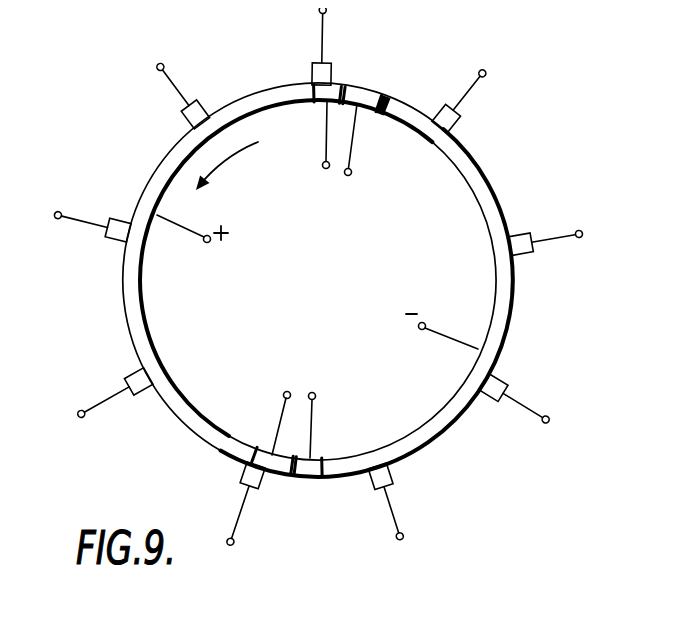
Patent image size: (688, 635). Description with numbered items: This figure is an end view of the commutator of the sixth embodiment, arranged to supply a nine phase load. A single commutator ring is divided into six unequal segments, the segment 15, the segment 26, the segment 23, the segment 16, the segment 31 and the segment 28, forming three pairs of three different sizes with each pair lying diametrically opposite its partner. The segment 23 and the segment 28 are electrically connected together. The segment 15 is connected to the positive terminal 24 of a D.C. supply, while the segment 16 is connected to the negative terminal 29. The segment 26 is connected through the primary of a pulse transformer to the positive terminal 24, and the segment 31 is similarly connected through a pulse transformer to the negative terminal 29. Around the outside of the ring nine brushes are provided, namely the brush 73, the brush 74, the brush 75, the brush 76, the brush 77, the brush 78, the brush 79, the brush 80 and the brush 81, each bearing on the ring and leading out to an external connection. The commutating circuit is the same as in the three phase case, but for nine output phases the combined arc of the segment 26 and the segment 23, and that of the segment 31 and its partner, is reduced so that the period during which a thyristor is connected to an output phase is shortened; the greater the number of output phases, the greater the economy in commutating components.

The segment 15 is at (145, 181).
The segment 16 is at (495, 197).
The segment 23 is at (387, 99).
The positive terminal 24 is at (197, 246).
The segment 26 is at (349, 82).
The segment 28 is at (281, 477).
The negative terminal 29 is at (434, 334).
The segment 31 is at (308, 477).
The brush 73 is at (331, 63).
The brush 74 is at (460, 122).
The brush 75 is at (524, 256).
The brush 76 is at (496, 397).
The brush 77 is at (392, 482).
The brush 78 is at (240, 480).
The brush 79 is at (138, 392).
The brush 80 is at (120, 244).
The brush 81 is at (183, 117).